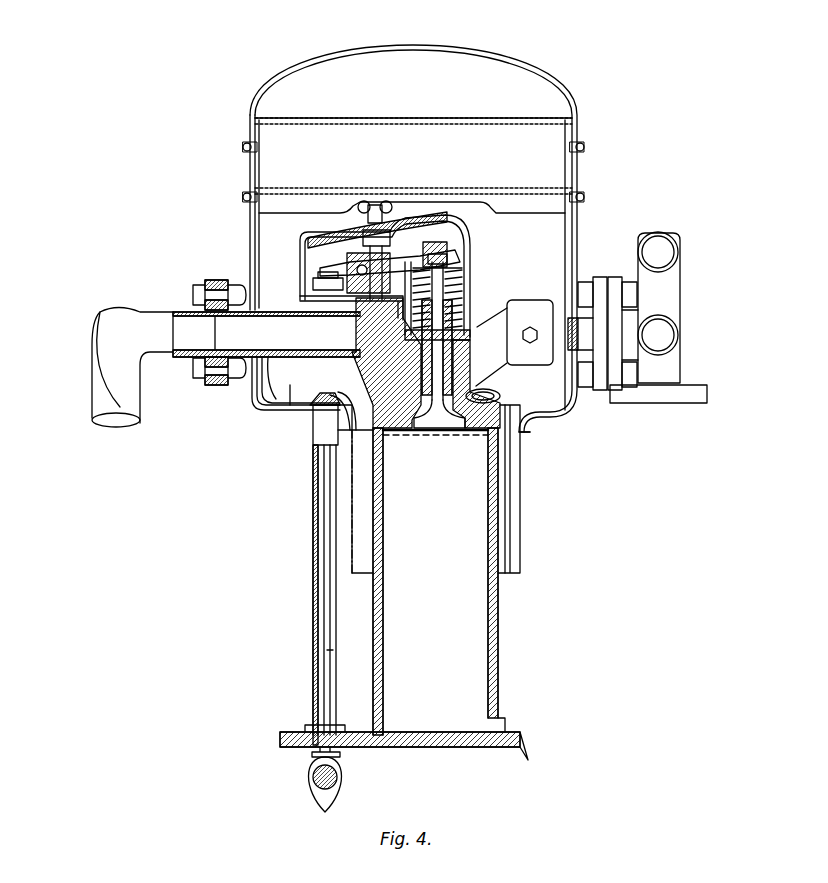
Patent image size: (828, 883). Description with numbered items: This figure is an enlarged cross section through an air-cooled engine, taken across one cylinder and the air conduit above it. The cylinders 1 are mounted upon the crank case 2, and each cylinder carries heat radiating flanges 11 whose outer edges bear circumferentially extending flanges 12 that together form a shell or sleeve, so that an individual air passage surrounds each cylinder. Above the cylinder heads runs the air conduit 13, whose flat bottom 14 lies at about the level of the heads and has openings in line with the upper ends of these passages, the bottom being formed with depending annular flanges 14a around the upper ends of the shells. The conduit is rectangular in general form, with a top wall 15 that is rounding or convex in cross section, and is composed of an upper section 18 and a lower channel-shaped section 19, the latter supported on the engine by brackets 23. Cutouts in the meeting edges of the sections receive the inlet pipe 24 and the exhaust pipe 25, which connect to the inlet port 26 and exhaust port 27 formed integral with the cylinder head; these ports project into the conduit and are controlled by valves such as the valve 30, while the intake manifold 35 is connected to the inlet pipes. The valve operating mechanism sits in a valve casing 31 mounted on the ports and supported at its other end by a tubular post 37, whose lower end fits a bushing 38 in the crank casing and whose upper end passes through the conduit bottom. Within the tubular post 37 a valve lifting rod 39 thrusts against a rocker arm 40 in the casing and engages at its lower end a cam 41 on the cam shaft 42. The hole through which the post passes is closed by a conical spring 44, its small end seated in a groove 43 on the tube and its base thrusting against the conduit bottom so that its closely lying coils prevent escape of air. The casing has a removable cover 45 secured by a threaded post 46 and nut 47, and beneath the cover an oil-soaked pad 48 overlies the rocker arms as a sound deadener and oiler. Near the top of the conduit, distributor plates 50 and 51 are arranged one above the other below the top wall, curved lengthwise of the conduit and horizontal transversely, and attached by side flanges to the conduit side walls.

The cylinders 1 is at (499, 626).
The crank case 2 is at (282, 735).
The heat radiating flanges 11 is at (356, 490).
The circumferentially extending flanges 12 is at (520, 545).
The air conduit 13 is at (252, 248).
The bottom 14 is at (291, 386).
The depending annular flanges 14a is at (530, 430).
The top wall 15 is at (414, 47).
The upper section 18 is at (252, 226).
The lower section 19 is at (256, 396).
The brackets 23 is at (262, 310).
The inlet pipe 24 is at (556, 316).
The exhaust pipe 25 is at (264, 398).
The inlet port 26 is at (488, 356).
The exhaust port 27 is at (386, 363).
The valve 30 is at (436, 428).
The valve casing 31 is at (472, 288).
The intake manifold 35 is at (92, 340).
The tubular posts 37 is at (325, 440).
The bushing 38 is at (312, 690).
The valve lifting rods 39 is at (324, 645).
The rocker arms 40 is at (313, 268).
The cams 41 is at (337, 798).
The cam shaft 42 is at (306, 777).
The groove 43 is at (330, 394).
The conical spring 44 is at (312, 402).
The removable cover 45 is at (336, 233).
The threaded post 46 is at (322, 262).
The nut 47 is at (358, 210).
The pad 48 is at (428, 220).
The plate 50 is at (310, 188).
The plate 51 is at (346, 118).